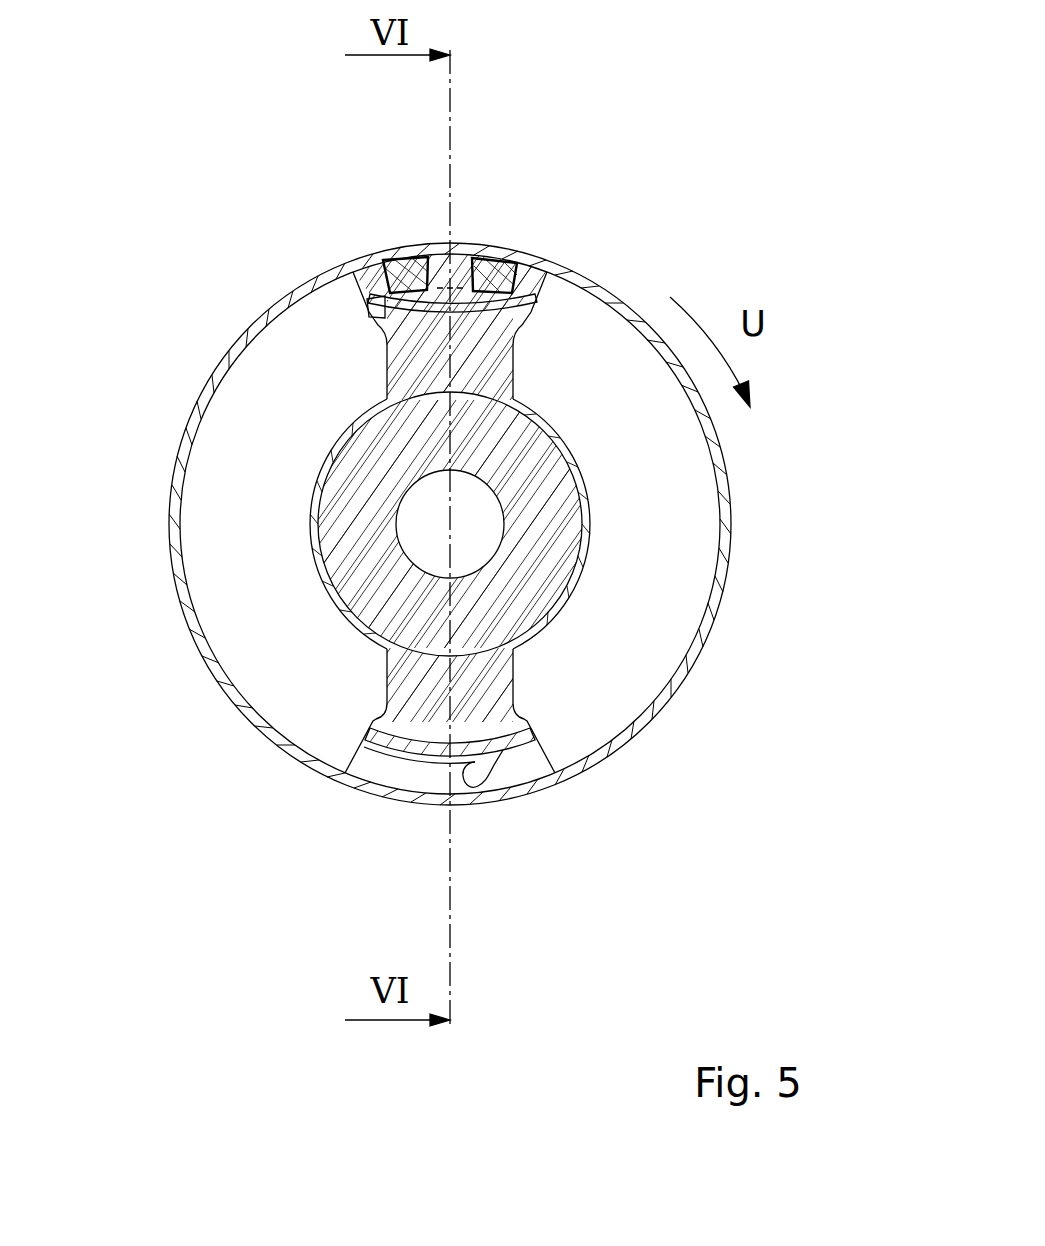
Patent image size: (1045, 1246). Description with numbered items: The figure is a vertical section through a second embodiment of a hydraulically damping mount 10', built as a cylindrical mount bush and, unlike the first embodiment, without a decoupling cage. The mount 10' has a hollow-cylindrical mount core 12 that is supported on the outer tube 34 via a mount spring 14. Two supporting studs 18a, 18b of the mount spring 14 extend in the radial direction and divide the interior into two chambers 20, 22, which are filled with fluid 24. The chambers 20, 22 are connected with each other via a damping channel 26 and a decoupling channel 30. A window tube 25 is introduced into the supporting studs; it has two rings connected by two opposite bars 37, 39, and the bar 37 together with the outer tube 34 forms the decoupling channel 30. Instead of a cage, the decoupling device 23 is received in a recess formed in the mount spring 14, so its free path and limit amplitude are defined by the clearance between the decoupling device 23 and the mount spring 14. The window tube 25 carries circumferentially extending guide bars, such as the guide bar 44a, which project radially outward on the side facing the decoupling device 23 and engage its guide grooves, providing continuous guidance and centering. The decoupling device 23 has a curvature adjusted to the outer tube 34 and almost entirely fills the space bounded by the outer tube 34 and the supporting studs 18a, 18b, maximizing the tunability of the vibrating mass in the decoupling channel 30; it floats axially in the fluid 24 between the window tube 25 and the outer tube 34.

The hydraulically damping mount 10' is at (236, 93).
The mount core 12 is at (530, 545).
The mount spring 14 is at (520, 372).
The supporting stud 18a is at (492, 695).
The supporting stud 18b is at (388, 378).
The chamber 20 is at (277, 465).
The chamber 22 is at (655, 655).
The decoupling device 23 is at (506, 258).
The fluid 24 is at (265, 660).
The window tube 25 is at (537, 305).
The damping channel 26 is at (412, 777).
The decoupling channel 30 is at (532, 280).
The outer tube 34 is at (531, 730).
The bar 37 is at (368, 308).
The bar 39 is at (503, 750).
The guide bar 44a is at (398, 259).